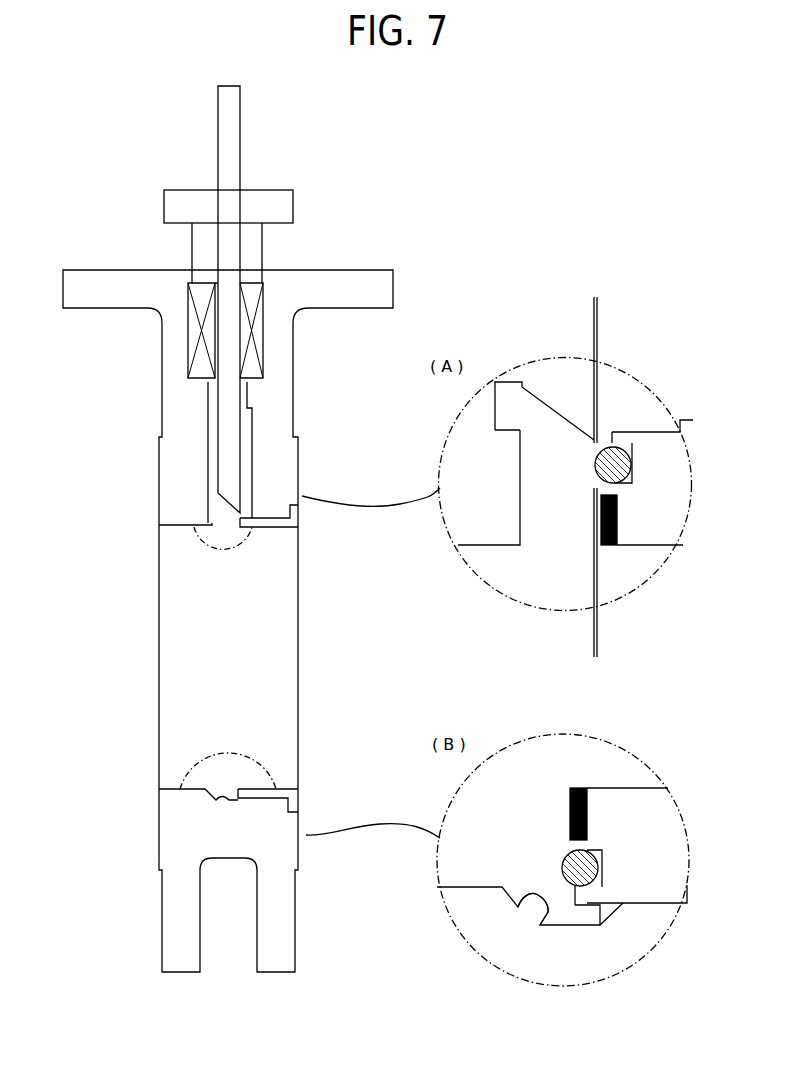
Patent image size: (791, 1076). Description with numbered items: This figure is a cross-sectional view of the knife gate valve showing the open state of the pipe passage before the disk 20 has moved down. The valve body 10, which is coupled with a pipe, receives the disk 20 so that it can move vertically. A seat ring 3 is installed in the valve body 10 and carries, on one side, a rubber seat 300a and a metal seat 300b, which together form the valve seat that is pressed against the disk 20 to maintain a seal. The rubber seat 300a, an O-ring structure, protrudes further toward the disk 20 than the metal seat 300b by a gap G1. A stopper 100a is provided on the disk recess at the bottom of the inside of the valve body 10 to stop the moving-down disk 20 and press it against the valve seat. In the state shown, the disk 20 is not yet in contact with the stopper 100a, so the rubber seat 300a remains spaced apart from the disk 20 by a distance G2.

The valve body 10 is at (151, 490).
The disk 20 is at (177, 400).
The seat ring 3 is at (302, 514).
The rubber seat 300a is at (617, 447).
The metal seat 300b is at (611, 549).
The stopper 100a is at (546, 930).
The gap G1 is at (618, 657).
The distance G2 is at (638, 322).